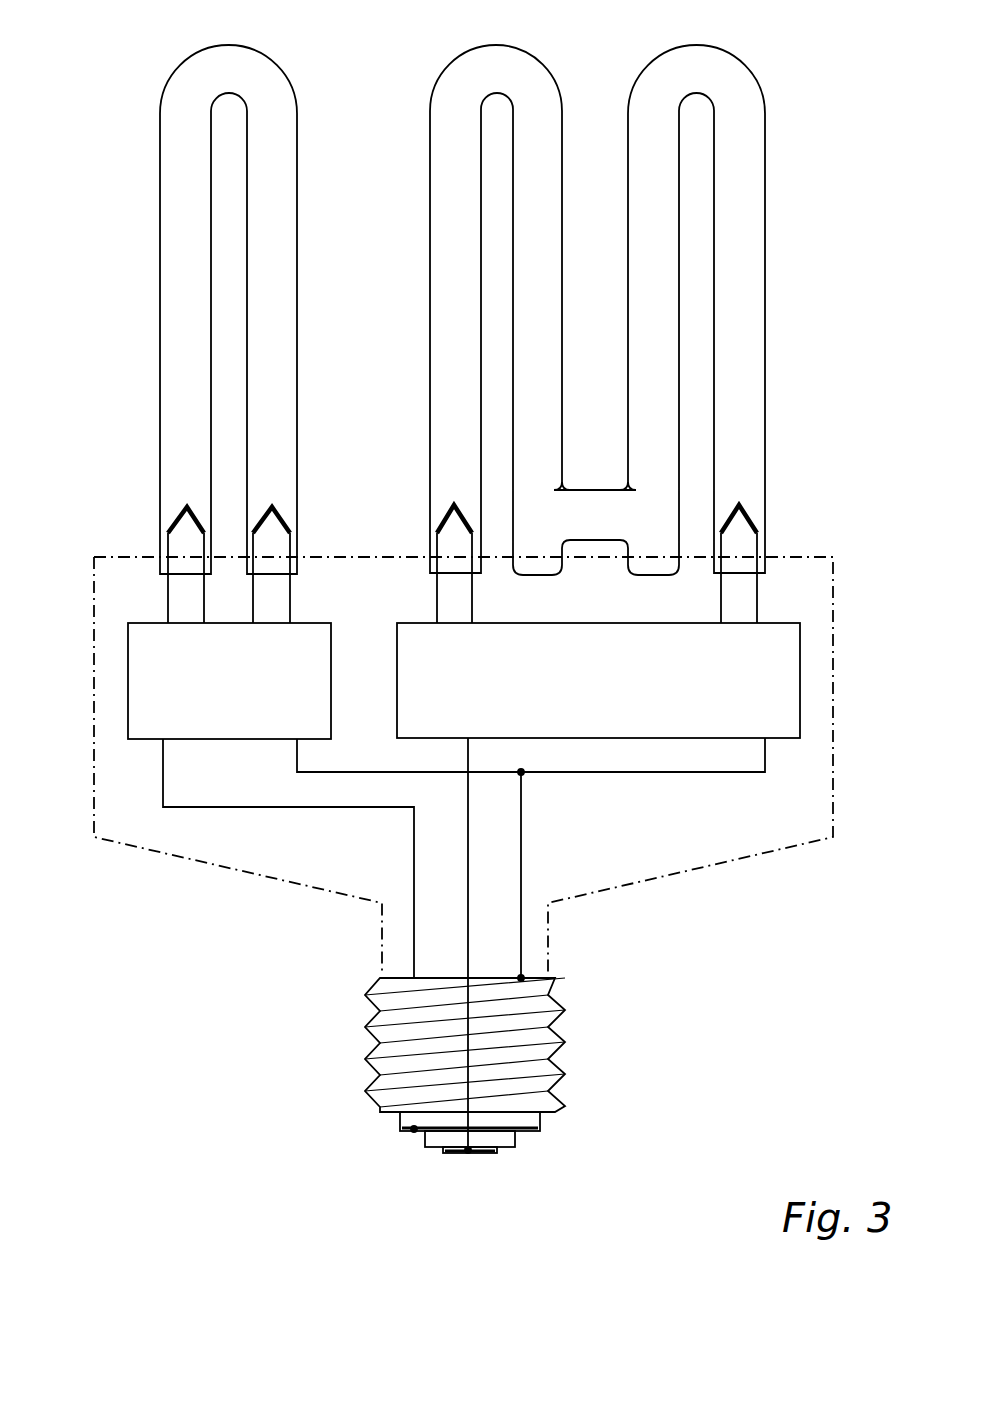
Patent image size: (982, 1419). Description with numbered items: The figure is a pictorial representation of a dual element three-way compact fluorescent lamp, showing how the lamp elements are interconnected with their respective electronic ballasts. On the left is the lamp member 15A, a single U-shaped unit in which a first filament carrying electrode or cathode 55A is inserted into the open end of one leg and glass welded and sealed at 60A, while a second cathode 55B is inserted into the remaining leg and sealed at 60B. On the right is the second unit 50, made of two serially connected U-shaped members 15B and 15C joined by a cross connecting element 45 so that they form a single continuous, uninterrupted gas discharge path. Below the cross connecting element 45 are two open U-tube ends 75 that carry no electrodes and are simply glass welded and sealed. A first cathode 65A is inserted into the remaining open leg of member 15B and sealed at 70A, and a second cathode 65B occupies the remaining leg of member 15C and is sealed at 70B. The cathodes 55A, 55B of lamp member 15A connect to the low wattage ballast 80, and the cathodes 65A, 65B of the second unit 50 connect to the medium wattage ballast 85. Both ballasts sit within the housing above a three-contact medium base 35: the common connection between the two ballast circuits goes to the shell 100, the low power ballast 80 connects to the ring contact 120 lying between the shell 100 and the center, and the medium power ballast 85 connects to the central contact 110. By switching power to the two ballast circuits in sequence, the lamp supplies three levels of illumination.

The lamp member 15A is at (160, 110).
The U-shaped member 15B is at (430, 110).
The U-shaped member 15C is at (765, 110).
The second unit 50 is at (765, 289).
The cross connecting element 45 is at (596, 515).
The first filament carrying electrode or cathode 55A is at (187, 507).
The second filament carrying electrode or cathode 55B is at (272, 507).
The first filament carrying electrode or cathode 65A is at (454, 505).
The second filament carrying electrode or cathode 65B is at (739, 505).
The glass welded seal 60A is at (160, 574).
The glass welded seal 60B is at (297, 574).
The glass welded seal 70A is at (430, 573).
The glass welded seal 70B is at (765, 573).
The open U-tube ends 75 is at (537, 575).
The low wattage ballast 80 is at (229, 681).
The medium wattage ballast 85 is at (598, 680).
The 3-contact medium base 35 is at (380, 978).
The shell 100 is at (563, 1010).
The central contact 110 is at (468, 1152).
The ring contact 120 is at (540, 1131).